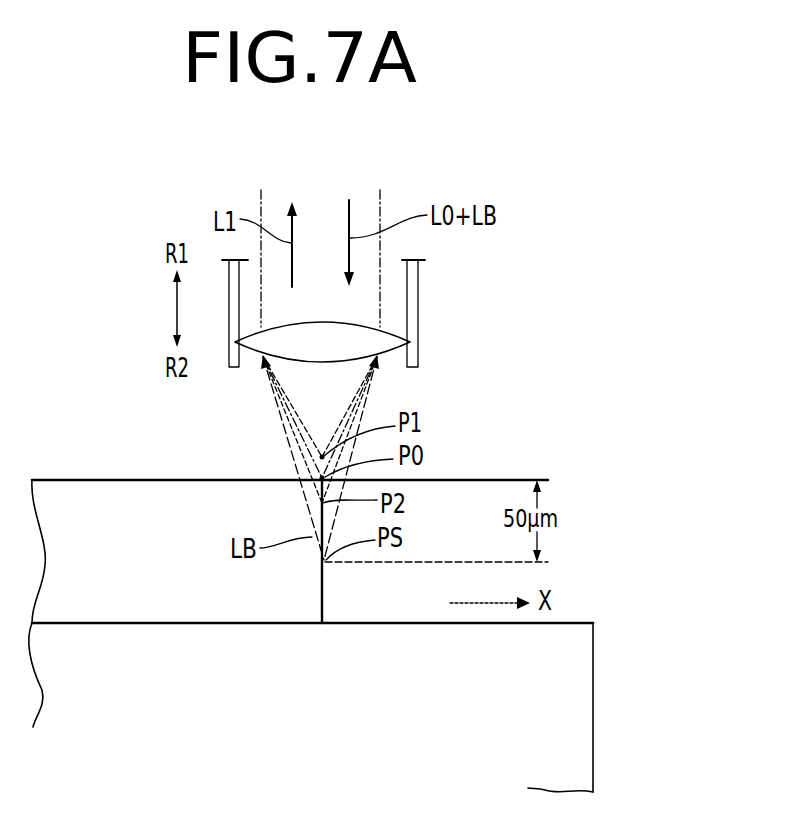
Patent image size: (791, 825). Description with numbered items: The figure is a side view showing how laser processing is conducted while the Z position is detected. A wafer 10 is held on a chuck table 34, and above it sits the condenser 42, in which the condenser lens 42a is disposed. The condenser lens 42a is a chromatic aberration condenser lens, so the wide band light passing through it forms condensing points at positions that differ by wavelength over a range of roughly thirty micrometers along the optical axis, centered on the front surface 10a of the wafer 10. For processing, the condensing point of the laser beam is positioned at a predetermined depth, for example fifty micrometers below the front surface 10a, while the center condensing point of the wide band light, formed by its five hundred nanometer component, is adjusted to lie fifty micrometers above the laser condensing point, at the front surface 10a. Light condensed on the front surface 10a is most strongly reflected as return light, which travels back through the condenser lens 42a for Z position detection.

The wafer 10 is at (290, 503).
The front surface of the wafer 10a is at (70, 480).
The condenser 42 is at (454, 291).
The condenser lens 42a is at (410, 340).
The chuck table 34 is at (577, 734).